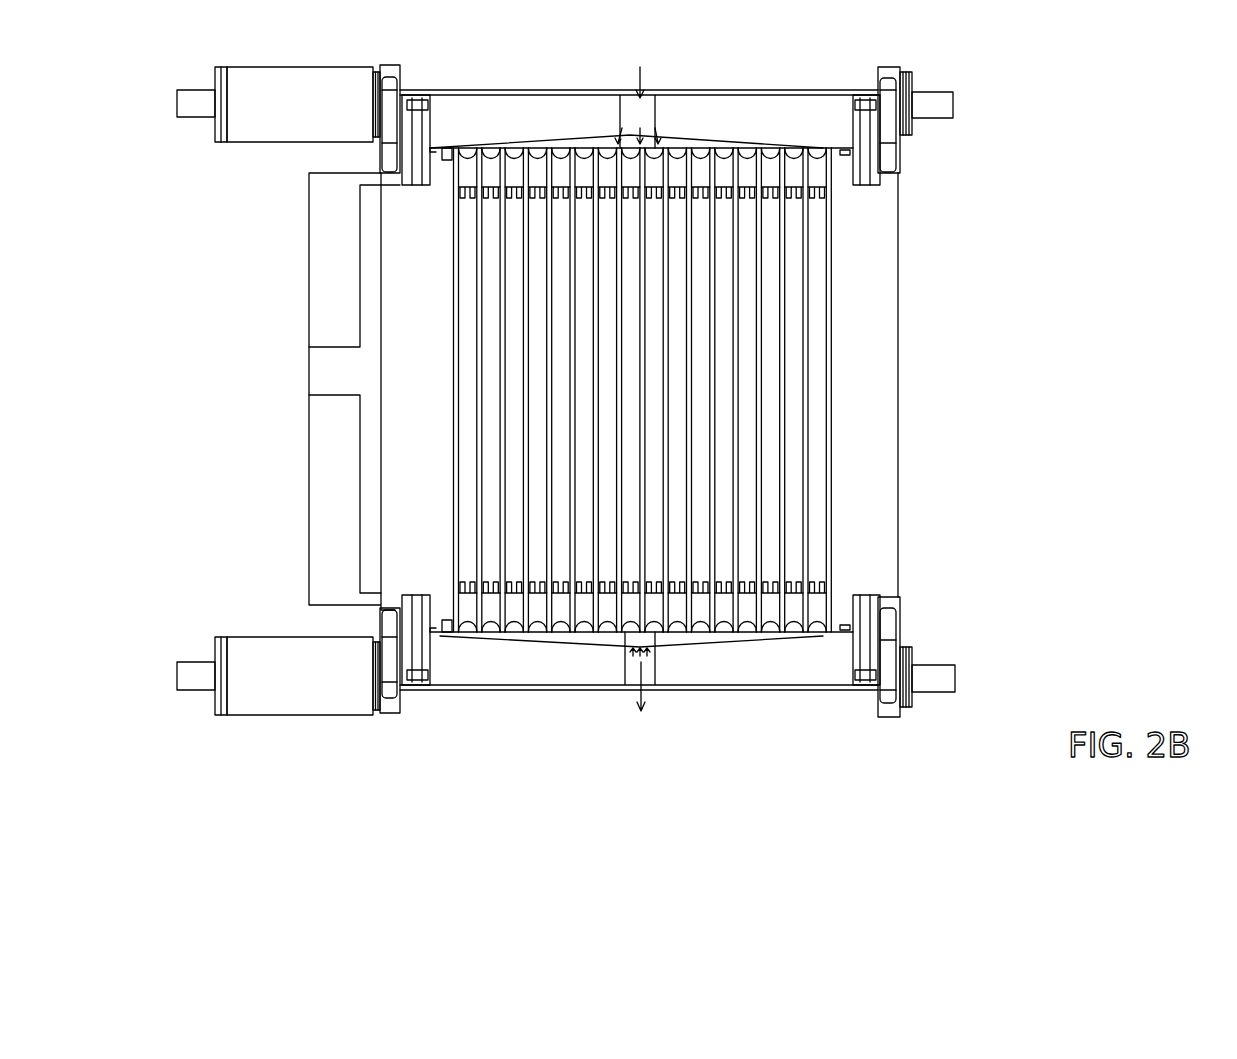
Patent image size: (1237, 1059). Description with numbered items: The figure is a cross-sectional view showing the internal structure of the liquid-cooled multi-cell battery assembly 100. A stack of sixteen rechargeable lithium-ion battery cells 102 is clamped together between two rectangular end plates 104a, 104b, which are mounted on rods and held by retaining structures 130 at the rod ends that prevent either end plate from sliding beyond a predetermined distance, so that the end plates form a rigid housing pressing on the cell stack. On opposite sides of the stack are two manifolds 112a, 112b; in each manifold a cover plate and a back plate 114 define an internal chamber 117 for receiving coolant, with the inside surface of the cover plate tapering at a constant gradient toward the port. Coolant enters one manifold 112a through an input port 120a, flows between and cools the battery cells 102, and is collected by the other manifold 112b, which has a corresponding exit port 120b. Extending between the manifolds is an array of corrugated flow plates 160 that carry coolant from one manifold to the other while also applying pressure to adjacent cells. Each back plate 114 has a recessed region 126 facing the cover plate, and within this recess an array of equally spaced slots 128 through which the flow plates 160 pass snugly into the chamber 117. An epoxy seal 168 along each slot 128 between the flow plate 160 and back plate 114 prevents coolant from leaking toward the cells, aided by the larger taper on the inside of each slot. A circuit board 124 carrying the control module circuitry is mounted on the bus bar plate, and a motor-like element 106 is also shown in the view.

The liquid-cooled multi-cell battery assembly 100 is at (1032, 246).
The battery cells 102 is at (508, 262).
The end plate 104a is at (395, 514).
The end plate 104b is at (882, 396).
The motor 106 is at (270, 145).
The manifold 112a is at (753, 105).
The manifold 112b is at (757, 672).
The back plate 114 is at (850, 190).
The internal chamber 117 is at (578, 143).
The input port 120a is at (645, 78).
The exit port 120b is at (640, 688).
The circuit board 124 is at (316, 274).
The recessed region 126 is at (450, 150).
The slots 128 is at (937, 672).
The retaining structure 130 is at (217, 68).
The corrugated flow plates 160 is at (500, 456).
The epoxy seal 168 is at (478, 150).